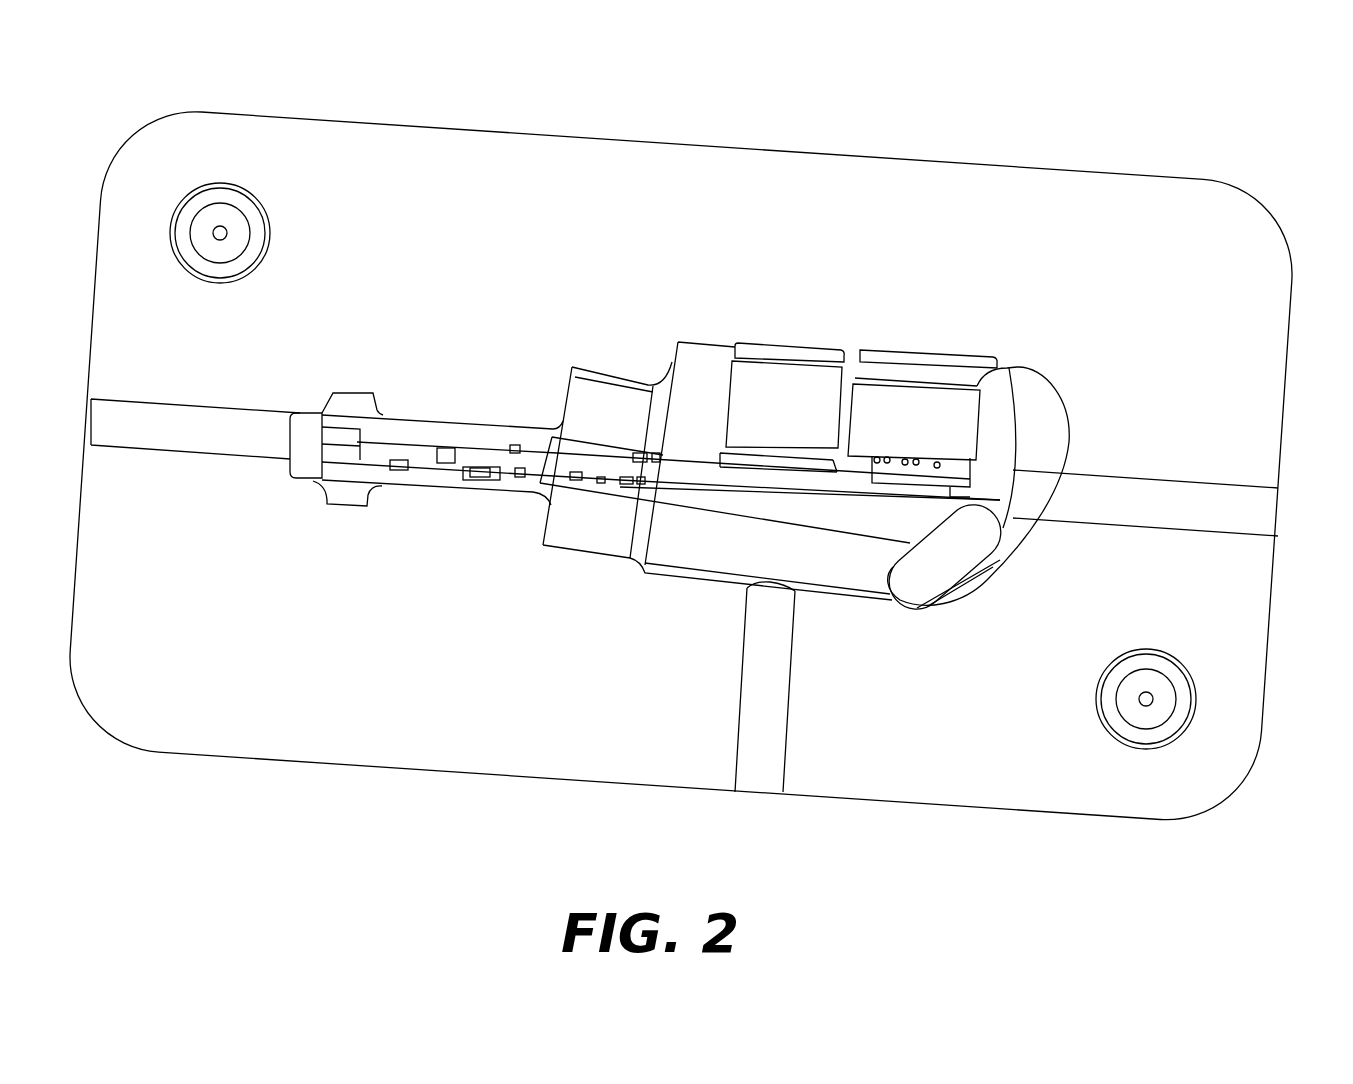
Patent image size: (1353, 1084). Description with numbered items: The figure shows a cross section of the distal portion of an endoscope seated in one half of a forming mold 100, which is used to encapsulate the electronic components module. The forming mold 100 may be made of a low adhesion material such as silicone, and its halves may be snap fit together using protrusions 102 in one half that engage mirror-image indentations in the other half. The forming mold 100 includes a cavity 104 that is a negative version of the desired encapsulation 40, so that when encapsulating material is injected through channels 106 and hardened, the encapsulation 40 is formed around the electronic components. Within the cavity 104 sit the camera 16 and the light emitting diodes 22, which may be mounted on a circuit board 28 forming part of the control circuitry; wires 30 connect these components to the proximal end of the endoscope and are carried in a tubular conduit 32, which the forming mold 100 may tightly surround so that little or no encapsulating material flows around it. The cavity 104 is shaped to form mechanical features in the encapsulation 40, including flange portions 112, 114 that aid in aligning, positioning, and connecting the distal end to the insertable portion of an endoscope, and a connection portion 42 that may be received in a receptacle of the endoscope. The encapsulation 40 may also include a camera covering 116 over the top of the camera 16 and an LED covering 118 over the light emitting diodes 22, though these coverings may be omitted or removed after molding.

The camera 16 is at (781, 447).
The light emitting diodes 22 is at (900, 453).
The circuit board 28 is at (423, 455).
The wires 30 is at (350, 435).
The conduit 32 is at (207, 457).
The encapsulation 40 is at (893, 600).
The connection portion 42 is at (487, 378).
The forming mold 100 is at (371, 193).
The protrusions 102 is at (215, 182).
The cavity 104 is at (609, 372).
The channels 106 is at (1143, 478).
The flange portion 112 is at (605, 523).
The flange portion 114 is at (350, 392).
The camera covering 116 is at (748, 347).
The LED covering 118 is at (948, 353).